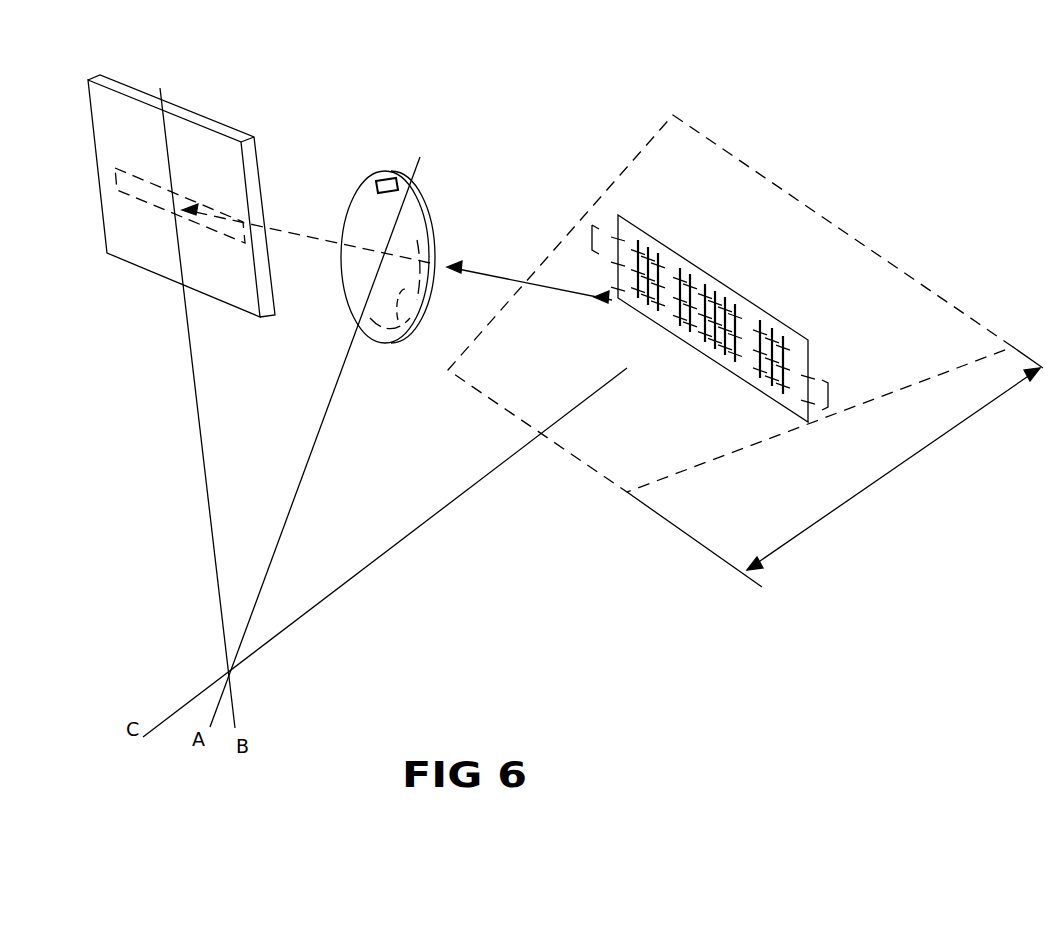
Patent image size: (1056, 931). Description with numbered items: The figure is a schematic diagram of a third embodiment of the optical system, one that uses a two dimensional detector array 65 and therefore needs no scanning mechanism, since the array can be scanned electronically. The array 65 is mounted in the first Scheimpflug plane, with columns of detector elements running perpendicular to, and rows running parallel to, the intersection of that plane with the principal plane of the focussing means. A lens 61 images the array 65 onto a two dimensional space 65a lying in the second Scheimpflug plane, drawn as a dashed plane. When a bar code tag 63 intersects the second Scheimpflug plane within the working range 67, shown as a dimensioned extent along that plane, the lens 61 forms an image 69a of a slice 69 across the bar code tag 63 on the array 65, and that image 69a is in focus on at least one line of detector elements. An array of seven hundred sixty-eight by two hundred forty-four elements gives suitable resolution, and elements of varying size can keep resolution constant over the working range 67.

The lens 61 is at (358, 192).
The bar code tag 63 is at (643, 227).
The two dimensional detector array 65 is at (147, 97).
The two dimensional space 65a is at (793, 198).
The working range 67 is at (800, 537).
The slice 69 is at (597, 250).
The image 69a is at (205, 222).